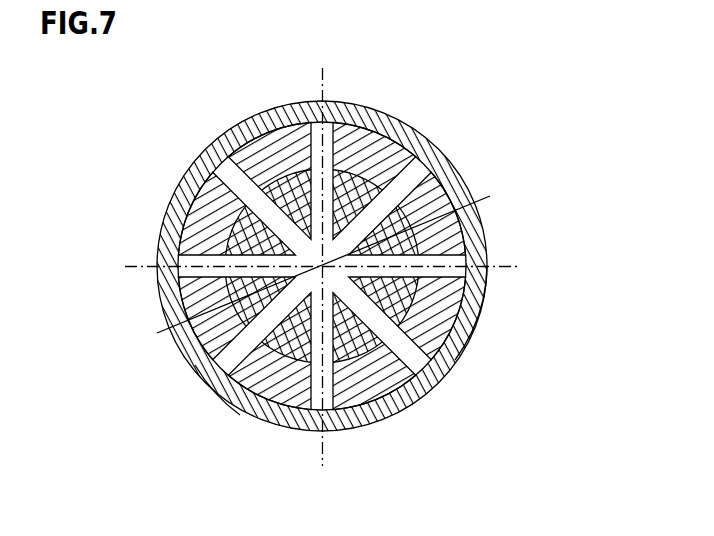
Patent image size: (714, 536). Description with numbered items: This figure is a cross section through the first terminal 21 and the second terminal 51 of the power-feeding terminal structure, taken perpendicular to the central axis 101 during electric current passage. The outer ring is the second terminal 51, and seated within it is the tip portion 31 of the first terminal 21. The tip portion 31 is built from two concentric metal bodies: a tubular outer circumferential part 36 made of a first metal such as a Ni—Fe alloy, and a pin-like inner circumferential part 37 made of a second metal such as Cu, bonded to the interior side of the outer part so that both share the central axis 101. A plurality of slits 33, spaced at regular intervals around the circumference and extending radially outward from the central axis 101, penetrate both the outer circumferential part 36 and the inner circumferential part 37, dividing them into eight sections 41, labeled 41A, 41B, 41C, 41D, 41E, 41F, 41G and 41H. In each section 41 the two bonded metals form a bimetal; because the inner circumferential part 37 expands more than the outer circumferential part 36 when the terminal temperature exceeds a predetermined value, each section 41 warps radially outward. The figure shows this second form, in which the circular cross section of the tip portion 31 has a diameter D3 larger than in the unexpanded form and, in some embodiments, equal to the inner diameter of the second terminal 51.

The first terminal 21 is at (407, 392).
The tip portion 31 is at (395, 137).
The slits 33 is at (218, 383).
The outer circumferential part 36 is at (473, 297).
The inner circumferential part 37 is at (460, 350).
The sections 41 is at (325, 267).
The section 41A is at (383, 130).
The section 41B is at (440, 234).
The section 41C is at (447, 311).
The section 41D is at (383, 398).
The section 41E is at (268, 398).
The section 41F is at (183, 302).
The section 41G is at (193, 198).
The section 41H is at (268, 128).
The second terminal 51 is at (200, 141).
The central axis 101 is at (265, 232).
The diameter D3 is at (433, 213).